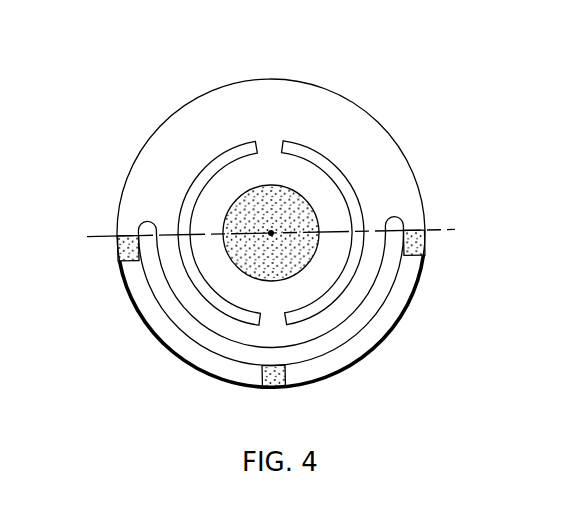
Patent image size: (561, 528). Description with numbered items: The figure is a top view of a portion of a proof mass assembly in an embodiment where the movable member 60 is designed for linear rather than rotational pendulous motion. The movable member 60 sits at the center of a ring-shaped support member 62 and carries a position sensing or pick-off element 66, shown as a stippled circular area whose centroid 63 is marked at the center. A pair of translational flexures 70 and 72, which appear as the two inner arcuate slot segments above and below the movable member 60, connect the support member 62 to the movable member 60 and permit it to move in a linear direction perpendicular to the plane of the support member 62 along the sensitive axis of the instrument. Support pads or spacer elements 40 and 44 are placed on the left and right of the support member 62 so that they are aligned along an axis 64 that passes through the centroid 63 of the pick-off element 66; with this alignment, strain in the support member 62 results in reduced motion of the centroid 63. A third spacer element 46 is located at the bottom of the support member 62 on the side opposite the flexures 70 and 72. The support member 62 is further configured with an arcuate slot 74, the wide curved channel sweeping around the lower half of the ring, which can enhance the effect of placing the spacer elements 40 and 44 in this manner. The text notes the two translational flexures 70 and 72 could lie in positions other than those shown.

The spacer element 40 is at (118, 262).
The spacer element 44 is at (428, 251).
The spacer element 46 is at (278, 388).
The movable member 60 is at (287, 158).
The support member 62 is at (263, 93).
The centroid 63 is at (274, 231).
The axis 64 is at (97, 239).
The pick-off element 66 is at (313, 224).
The translational flexure 70 is at (267, 142).
The translational flexure 72 is at (272, 320).
The arcuate slot 74 is at (372, 306).